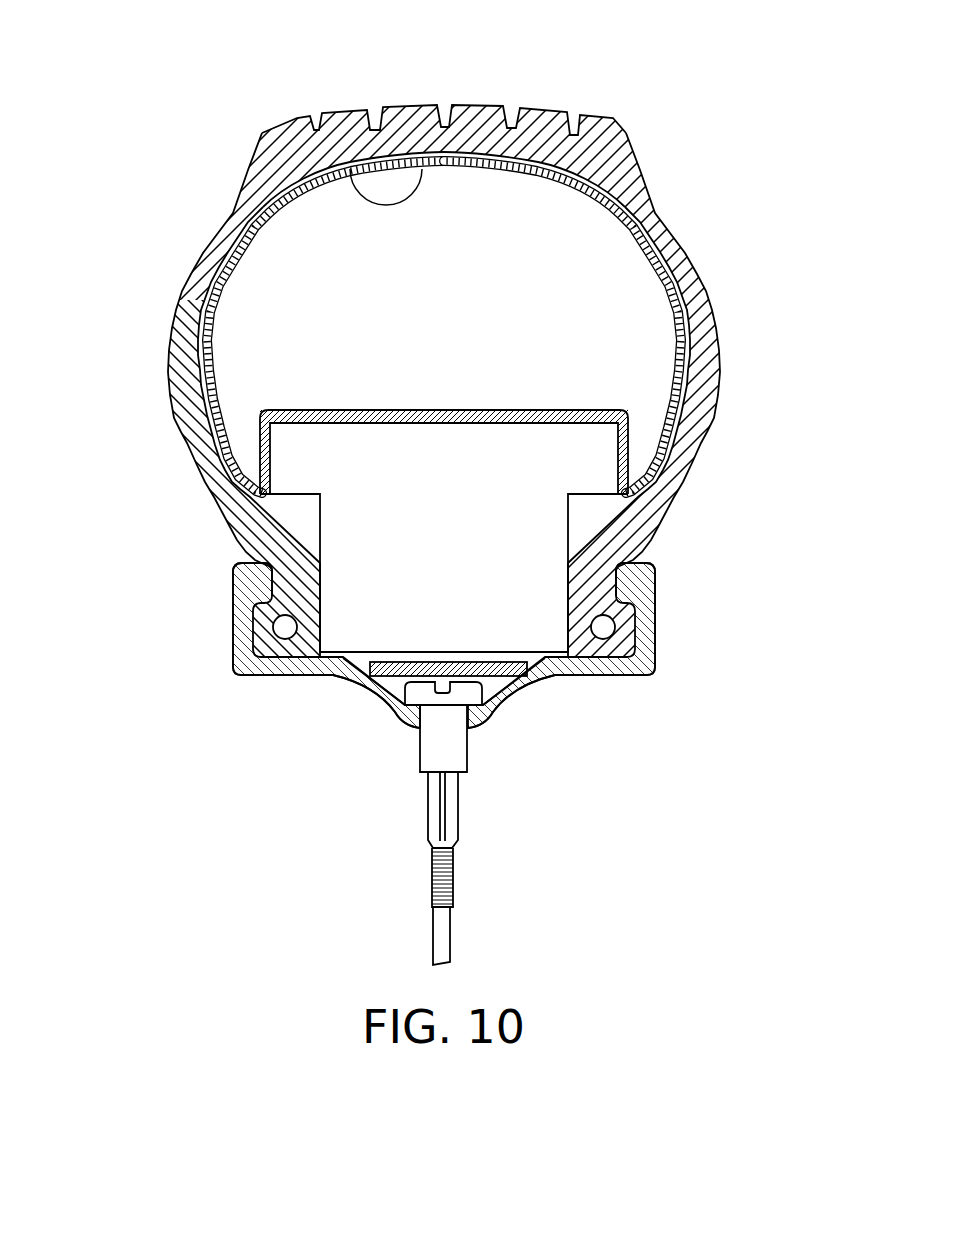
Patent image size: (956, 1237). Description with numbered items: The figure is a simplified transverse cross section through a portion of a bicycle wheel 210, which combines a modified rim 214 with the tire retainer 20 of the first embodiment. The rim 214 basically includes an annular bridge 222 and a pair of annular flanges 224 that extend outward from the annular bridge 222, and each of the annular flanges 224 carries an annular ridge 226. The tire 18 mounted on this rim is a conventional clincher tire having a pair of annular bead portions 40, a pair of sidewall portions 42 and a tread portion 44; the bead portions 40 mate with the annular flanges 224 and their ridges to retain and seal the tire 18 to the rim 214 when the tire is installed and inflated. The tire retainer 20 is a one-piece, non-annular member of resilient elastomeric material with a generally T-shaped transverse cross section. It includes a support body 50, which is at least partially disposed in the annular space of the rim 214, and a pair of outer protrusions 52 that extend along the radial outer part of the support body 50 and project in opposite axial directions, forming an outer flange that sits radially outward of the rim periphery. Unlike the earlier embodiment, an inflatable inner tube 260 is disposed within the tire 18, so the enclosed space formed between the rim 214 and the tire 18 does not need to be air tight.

The tire 18 is at (478, 350).
The tire retainer 20 is at (445, 485).
The bead portions 40 is at (283, 655).
The sidewall portions 42 is at (182, 291).
The tread portion 44 is at (470, 106).
The support body 50 is at (464, 576).
The outer protrusions 52 is at (258, 497).
The bicycle wheel 210 is at (478, 482).
The rim 214 is at (438, 666).
The annular bridge 222 is at (383, 698).
The annular flanges 224 is at (232, 645).
The annular ridge 226 is at (240, 566).
The inflatable inner tube 260 is at (363, 200).